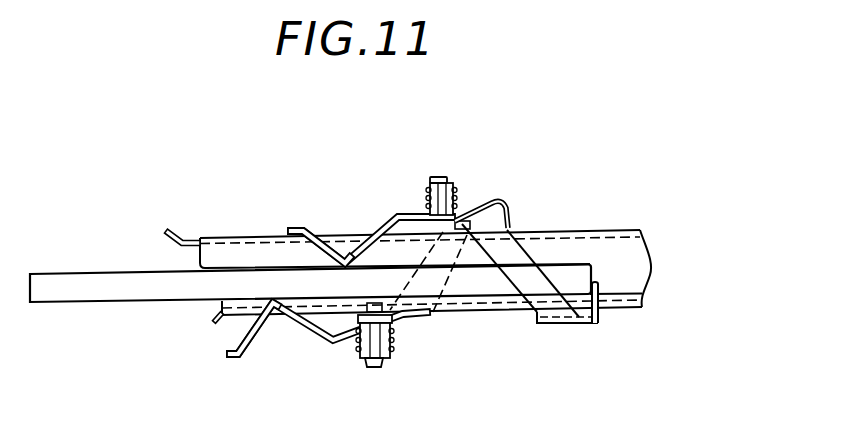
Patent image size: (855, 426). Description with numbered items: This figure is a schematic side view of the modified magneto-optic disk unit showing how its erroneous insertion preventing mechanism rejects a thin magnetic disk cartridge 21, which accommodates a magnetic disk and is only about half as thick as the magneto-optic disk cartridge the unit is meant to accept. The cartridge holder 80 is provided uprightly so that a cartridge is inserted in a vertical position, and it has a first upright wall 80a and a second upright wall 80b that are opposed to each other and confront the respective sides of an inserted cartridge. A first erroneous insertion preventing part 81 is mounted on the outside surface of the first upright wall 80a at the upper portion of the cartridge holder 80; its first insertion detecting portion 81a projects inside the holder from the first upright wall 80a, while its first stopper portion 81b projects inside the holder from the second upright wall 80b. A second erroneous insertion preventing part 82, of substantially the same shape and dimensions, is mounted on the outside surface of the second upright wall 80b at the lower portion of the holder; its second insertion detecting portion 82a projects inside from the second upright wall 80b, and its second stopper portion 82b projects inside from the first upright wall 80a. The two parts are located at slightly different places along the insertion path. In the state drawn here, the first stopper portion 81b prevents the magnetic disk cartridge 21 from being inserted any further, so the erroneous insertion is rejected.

The magnetic disk cartridge 21 is at (88, 273).
The cartridge holder 80 is at (452, 246).
The first upright wall 80a is at (588, 230).
The second upright wall 80b is at (642, 308).
The first erroneous insertion preventing part 81 is at (407, 212).
The first insertion detecting portion 81a is at (342, 248).
The first stopper portion 81b is at (600, 293).
The second erroneous insertion preventing part 82 is at (403, 320).
The second insertion detecting portion 82a is at (258, 322).
The second stopper portion 82b is at (513, 212).